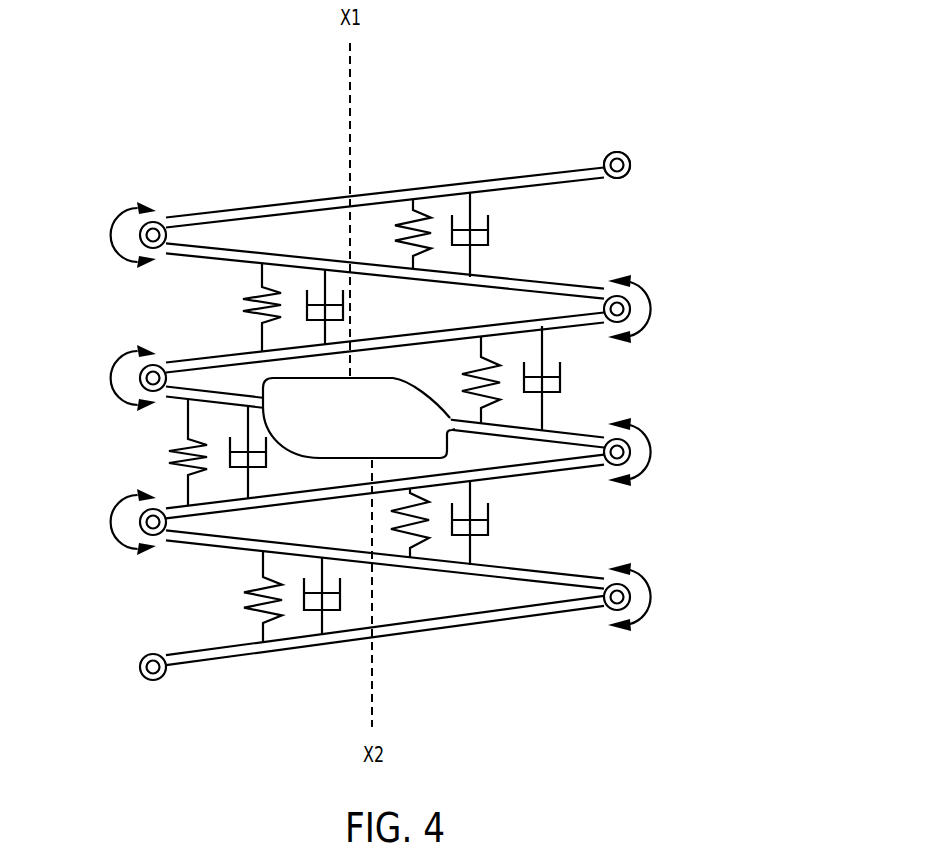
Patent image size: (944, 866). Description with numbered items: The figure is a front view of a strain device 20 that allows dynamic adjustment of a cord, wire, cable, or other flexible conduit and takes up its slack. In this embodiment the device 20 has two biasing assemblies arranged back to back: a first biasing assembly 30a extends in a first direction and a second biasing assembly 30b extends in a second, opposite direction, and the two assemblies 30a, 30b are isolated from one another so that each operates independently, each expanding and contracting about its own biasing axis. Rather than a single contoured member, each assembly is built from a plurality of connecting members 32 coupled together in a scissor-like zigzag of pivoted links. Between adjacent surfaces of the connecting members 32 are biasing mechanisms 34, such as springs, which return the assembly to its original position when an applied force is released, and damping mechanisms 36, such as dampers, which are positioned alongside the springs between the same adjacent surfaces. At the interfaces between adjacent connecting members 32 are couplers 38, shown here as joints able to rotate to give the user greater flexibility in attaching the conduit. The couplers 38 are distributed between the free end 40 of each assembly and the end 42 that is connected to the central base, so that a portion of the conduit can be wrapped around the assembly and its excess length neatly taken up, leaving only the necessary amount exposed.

The strain device 20 is at (180, 133).
The first biasing assembly 30a is at (686, 252).
The second biasing assembly 30b is at (738, 566).
The connecting member 32 is at (472, 627).
The biasing mechanism 34 is at (424, 224).
The damping mechanism 36 is at (482, 238).
The coupler 38 is at (610, 462).
The free end 40 is at (611, 152).
The end 42 is at (262, 398).